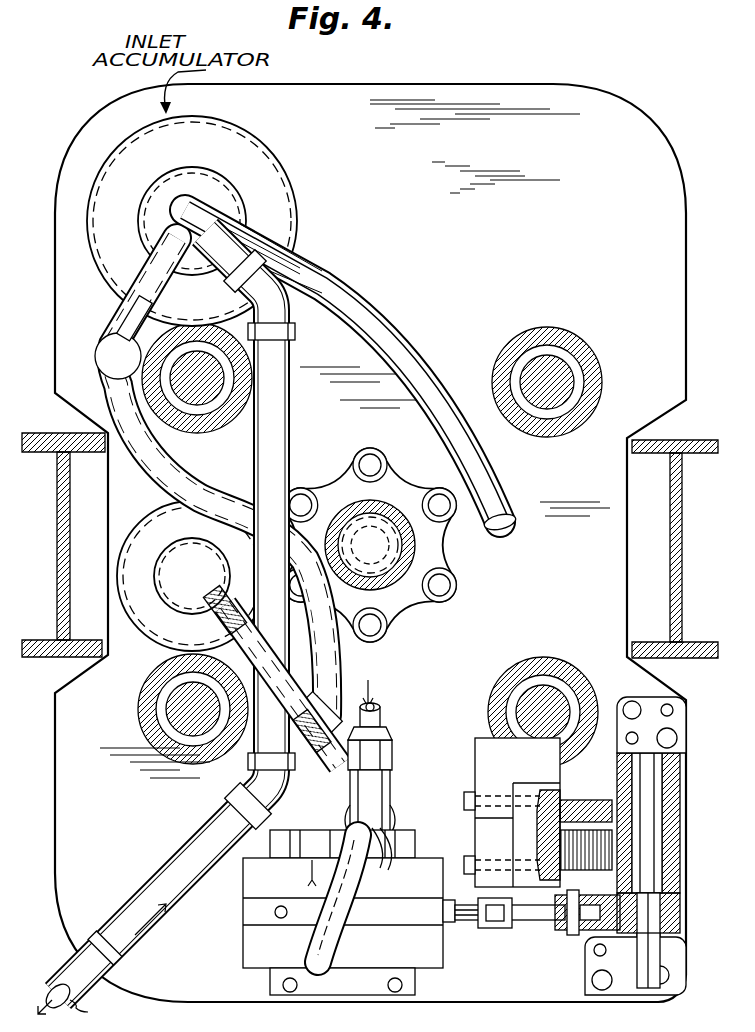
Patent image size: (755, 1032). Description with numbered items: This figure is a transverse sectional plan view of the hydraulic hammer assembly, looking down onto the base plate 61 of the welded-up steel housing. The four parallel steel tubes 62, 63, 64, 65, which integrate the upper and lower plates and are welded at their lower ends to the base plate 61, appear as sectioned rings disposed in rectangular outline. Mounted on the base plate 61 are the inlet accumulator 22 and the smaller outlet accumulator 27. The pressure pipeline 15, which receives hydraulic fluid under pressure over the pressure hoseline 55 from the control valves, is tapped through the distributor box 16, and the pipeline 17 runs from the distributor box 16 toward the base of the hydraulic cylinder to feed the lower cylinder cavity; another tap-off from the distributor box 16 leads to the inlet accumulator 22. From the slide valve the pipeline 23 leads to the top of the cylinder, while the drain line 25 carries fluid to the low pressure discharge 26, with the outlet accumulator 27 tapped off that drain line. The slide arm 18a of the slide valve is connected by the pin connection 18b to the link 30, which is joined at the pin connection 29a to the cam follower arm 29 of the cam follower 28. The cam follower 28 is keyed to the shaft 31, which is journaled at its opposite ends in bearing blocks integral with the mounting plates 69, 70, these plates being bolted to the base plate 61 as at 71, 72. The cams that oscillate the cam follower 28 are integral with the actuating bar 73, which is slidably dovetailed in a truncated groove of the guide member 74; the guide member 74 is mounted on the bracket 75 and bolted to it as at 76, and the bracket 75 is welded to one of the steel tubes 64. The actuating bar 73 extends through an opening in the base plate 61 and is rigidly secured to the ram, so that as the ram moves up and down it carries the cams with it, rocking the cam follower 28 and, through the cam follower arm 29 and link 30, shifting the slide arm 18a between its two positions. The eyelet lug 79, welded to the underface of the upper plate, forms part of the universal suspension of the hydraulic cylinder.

The pipeline 15 is at (253, 468).
The distributor box 16 is at (192, 167).
The pipeline 17 is at (372, 306).
The slide arm 18a is at (455, 900).
The pin connection 18b is at (492, 928).
The inlet accumulator 22 is at (218, 221).
The pipeline 23 is at (348, 942).
The drain line 25 is at (200, 642).
The low pressure discharge 26 is at (192, 836).
The outlet accumulator 27 is at (120, 523).
The cam follower 28 is at (680, 836).
The cam follower arm 29 is at (604, 905).
The pin connection 29a is at (572, 936).
The link 30 is at (520, 922).
The shaft 31 is at (660, 975).
The pressure hoseline 55 is at (88, 1014).
The base plate 61 is at (507, 84).
The tube 62 is at (188, 433).
The tube 63 is at (536, 440).
The tube 64 is at (540, 660).
The tube 65 is at (145, 723).
The mounting plate 69 is at (673, 722).
The mounting plate 70 is at (626, 965).
The bolt 71 is at (678, 740).
The bolt 72 is at (592, 985).
The actuating bar 73 is at (556, 800).
The guide member 74 is at (525, 846).
The bracket 75 is at (475, 818).
The bolt 76 is at (464, 798).
The eyelet lug 79 is at (478, 738).